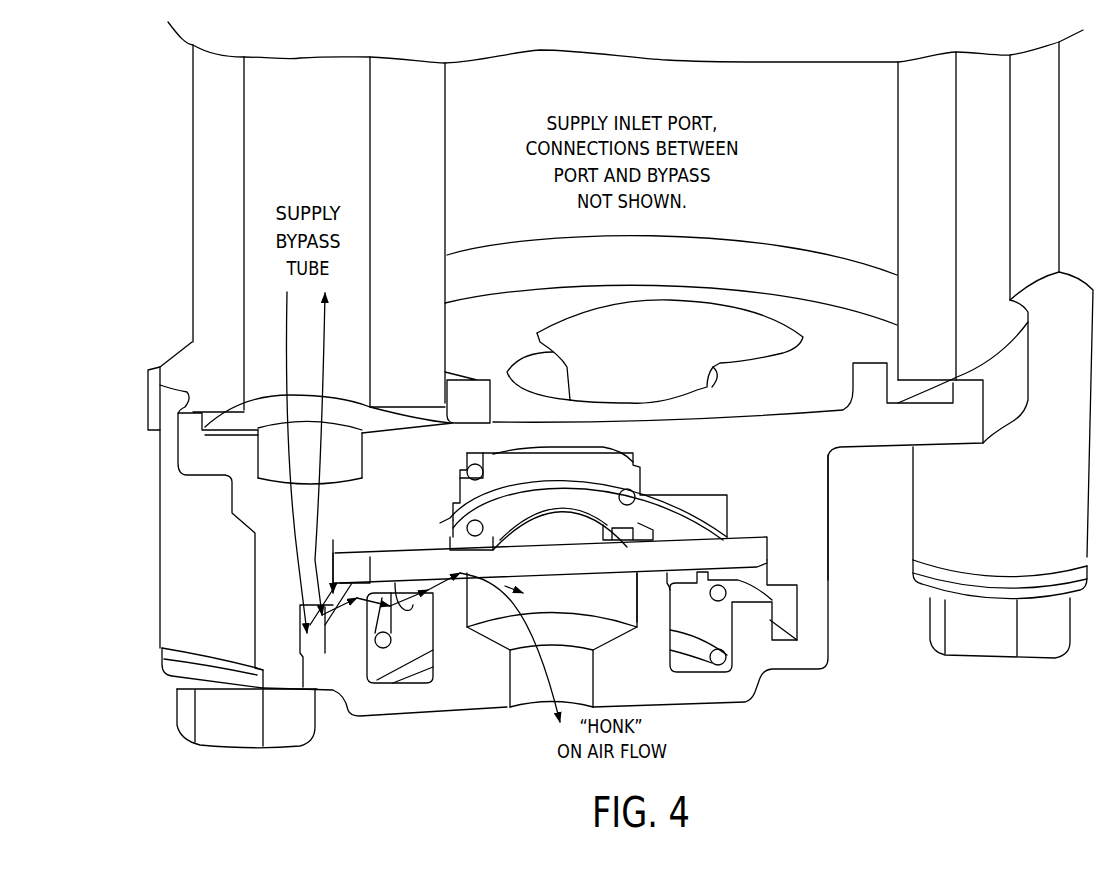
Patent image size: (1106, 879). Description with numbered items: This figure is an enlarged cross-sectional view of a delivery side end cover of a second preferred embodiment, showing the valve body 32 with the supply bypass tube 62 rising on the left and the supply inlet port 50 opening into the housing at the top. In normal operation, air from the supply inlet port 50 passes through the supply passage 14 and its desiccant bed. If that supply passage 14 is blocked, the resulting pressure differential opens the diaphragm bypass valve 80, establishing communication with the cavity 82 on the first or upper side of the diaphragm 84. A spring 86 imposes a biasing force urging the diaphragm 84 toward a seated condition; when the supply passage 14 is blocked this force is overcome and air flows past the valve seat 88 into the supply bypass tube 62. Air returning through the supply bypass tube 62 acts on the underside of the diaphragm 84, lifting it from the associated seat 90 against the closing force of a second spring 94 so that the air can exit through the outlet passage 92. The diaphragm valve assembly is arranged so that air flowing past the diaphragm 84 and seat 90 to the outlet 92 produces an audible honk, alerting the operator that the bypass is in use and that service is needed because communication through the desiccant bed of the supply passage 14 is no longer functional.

The supply passage 14 is at (840, 83).
The valve body 32 is at (150, 563).
The supply inlet port 50 is at (373, 553).
The supply bypass tube 62 is at (320, 78).
The diaphragm bypass valve 80 is at (693, 510).
The cavity 82 is at (670, 503).
The diaphragm 84 is at (737, 537).
The spring 86 is at (718, 665).
The valve seat 88 is at (370, 553).
The seat 90 is at (650, 578).
The passage (outlet) 92 is at (530, 702).
The spring 94 is at (474, 463).